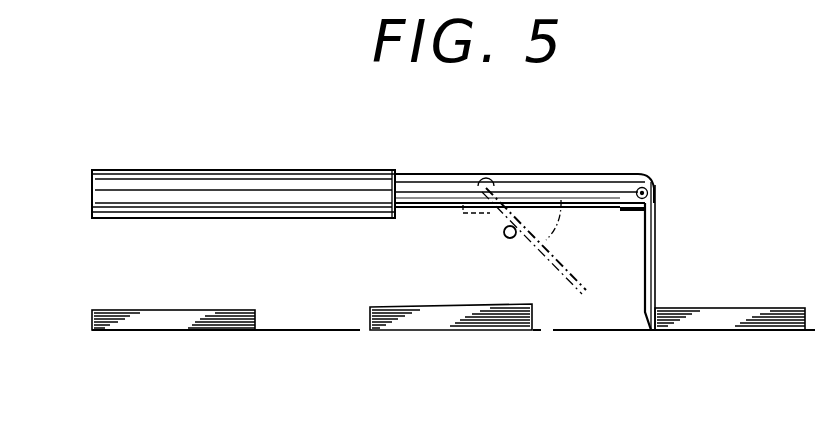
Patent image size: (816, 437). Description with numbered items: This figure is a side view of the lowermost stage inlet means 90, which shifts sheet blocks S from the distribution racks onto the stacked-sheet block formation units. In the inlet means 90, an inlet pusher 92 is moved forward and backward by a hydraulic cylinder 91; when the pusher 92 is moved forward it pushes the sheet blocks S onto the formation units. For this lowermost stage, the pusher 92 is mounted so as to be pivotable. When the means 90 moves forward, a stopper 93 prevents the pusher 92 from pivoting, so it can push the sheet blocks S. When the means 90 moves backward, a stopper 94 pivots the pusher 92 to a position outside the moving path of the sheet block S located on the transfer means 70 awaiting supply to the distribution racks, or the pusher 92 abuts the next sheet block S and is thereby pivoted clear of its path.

The transfer means 70 is at (310, 334).
The inlet means 90 is at (415, 143).
The hydraulic cylinder 91 is at (260, 170).
The inlet pusher 92 is at (561, 200).
The stopper 93 is at (633, 220).
The stopper 94 is at (503, 233).
The sheet block S is at (397, 305).